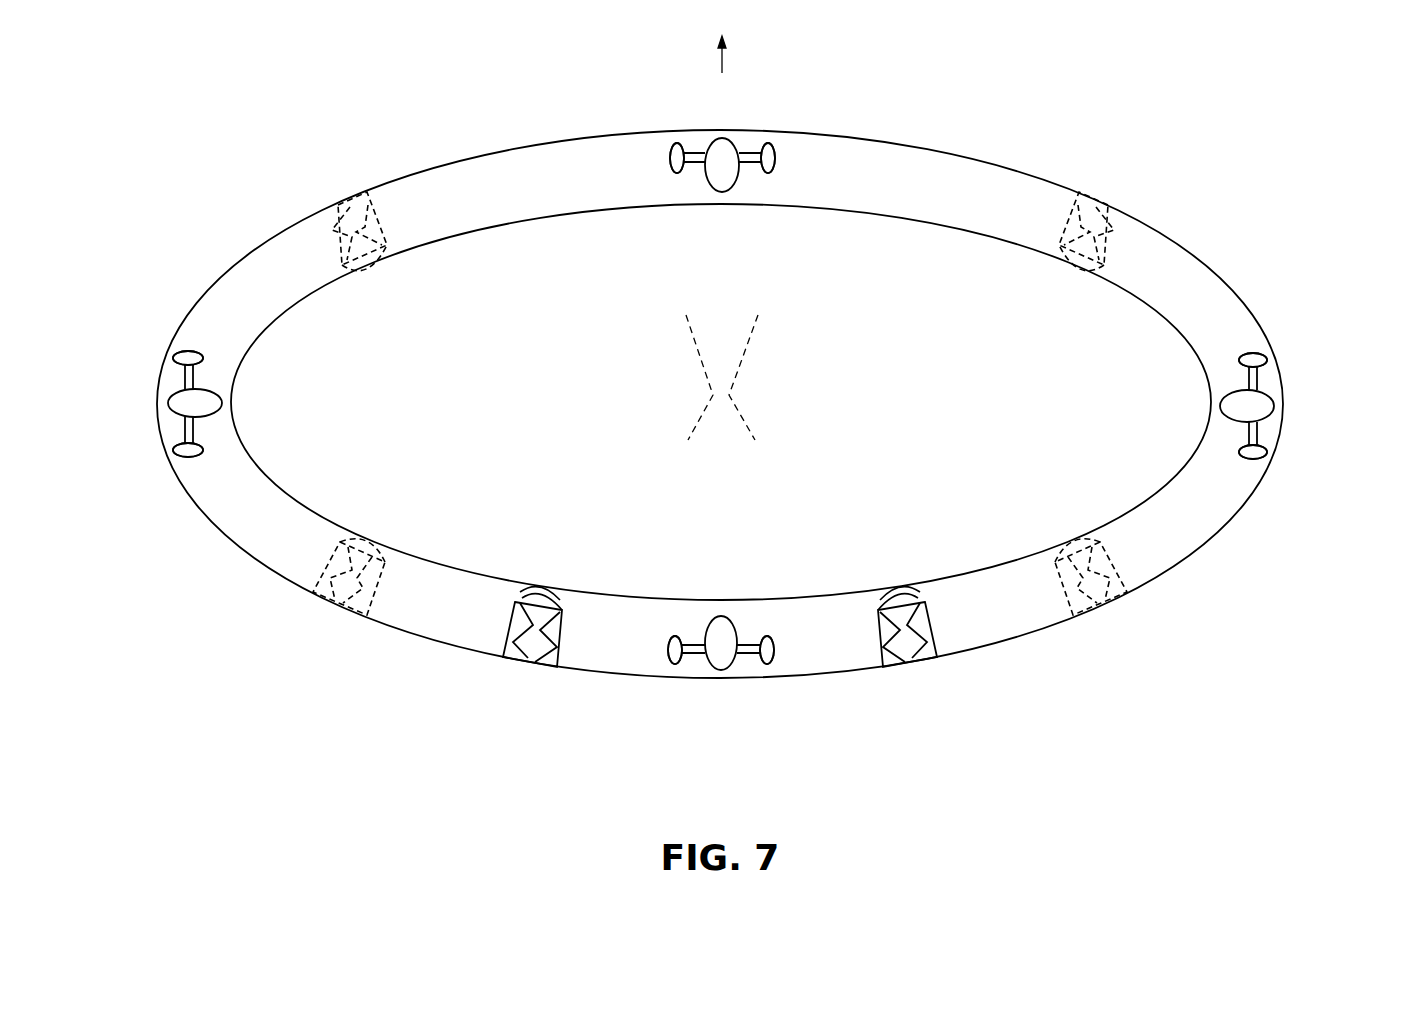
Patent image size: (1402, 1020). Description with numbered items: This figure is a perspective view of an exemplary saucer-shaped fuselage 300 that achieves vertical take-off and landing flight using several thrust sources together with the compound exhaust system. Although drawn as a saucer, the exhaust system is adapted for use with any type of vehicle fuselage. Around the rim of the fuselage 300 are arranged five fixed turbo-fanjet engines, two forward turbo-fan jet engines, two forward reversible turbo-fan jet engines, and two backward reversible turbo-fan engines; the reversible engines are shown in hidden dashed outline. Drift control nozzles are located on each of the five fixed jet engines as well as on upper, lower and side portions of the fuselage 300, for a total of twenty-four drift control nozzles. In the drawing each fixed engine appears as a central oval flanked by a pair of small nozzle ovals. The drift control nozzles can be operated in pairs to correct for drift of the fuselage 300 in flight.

The fuselage 300 is at (1228, 206).